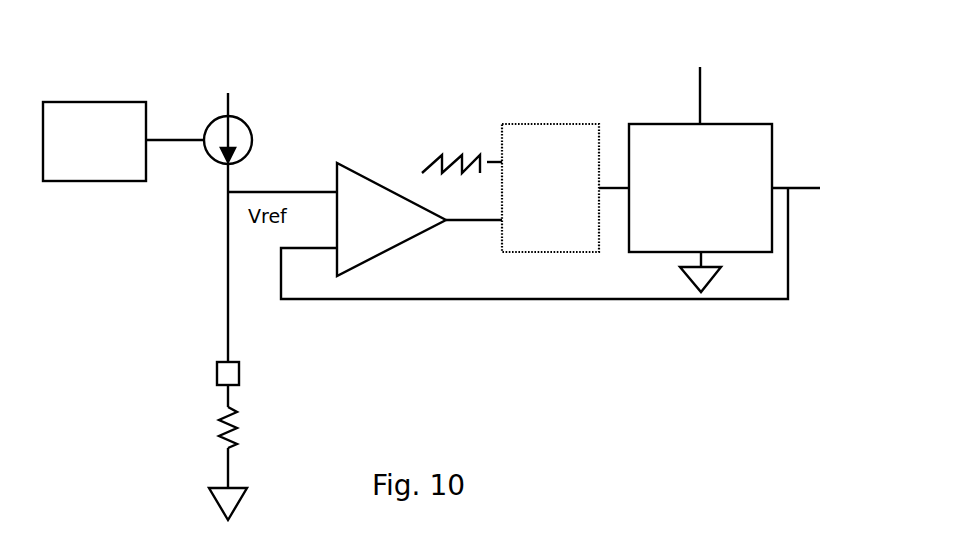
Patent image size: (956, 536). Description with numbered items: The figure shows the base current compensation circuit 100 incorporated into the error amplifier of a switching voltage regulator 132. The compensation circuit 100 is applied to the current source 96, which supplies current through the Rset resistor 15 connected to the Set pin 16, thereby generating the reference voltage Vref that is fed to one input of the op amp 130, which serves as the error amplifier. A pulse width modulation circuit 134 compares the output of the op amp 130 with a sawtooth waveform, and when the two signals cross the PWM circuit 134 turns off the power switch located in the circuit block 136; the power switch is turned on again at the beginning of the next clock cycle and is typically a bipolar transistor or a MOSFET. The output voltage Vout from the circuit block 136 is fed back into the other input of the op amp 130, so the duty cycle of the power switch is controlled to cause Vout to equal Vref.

The base current compensation circuit 100 is at (67, 181).
The current source 96 is at (252, 140).
The Set pin 16 is at (216, 369).
The Rset resistor 15 is at (208, 433).
The switching voltage regulator 132 is at (478, 50).
The op amp 130 is at (352, 168).
The pulse width modulation circuit 134 is at (542, 124).
The circuit block 136 is at (715, 124).